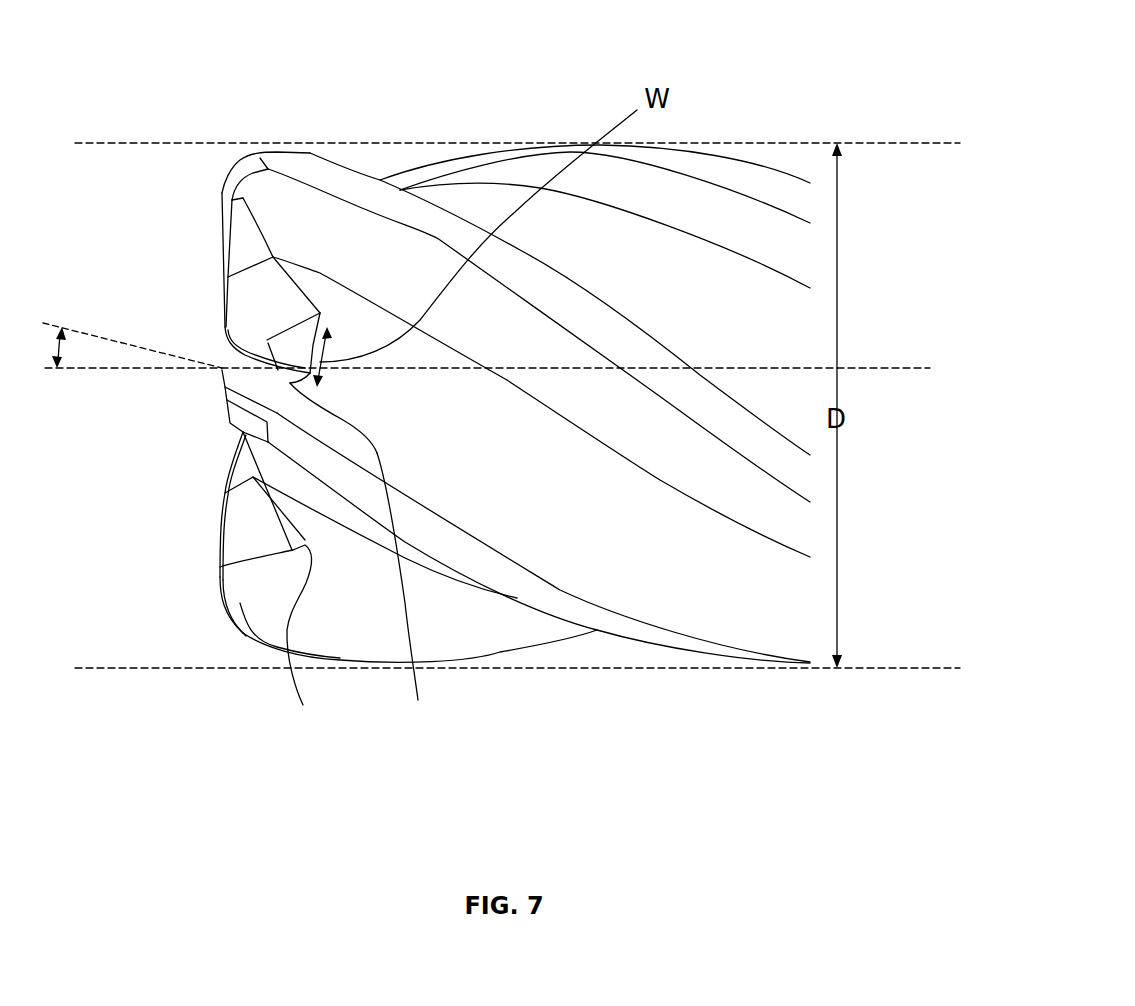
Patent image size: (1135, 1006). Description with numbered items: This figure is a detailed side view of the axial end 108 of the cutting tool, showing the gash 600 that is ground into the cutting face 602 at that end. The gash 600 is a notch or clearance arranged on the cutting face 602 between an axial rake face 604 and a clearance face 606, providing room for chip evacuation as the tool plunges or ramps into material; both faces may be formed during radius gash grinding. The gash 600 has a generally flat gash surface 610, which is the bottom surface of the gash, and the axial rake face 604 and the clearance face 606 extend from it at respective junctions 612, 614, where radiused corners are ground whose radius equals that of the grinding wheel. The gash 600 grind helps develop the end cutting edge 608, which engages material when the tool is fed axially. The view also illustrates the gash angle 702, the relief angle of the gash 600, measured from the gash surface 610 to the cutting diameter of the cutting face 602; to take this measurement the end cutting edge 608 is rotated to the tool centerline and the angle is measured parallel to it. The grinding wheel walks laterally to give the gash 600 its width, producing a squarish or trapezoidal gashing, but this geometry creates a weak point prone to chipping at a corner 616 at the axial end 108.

The axial end 108 is at (215, 122).
The gash angle 702 is at (62, 347).
The corner 616 is at (270, 203).
The gash surface 610 is at (322, 322).
The junction 614 is at (332, 318).
The clearance face 606 is at (263, 300).
The gash 600 is at (255, 337).
The cutting face 602 is at (155, 394).
The axial rake face 604 is at (228, 513).
The end cutting edge 608 is at (222, 543).
The junction 612 is at (303, 705).